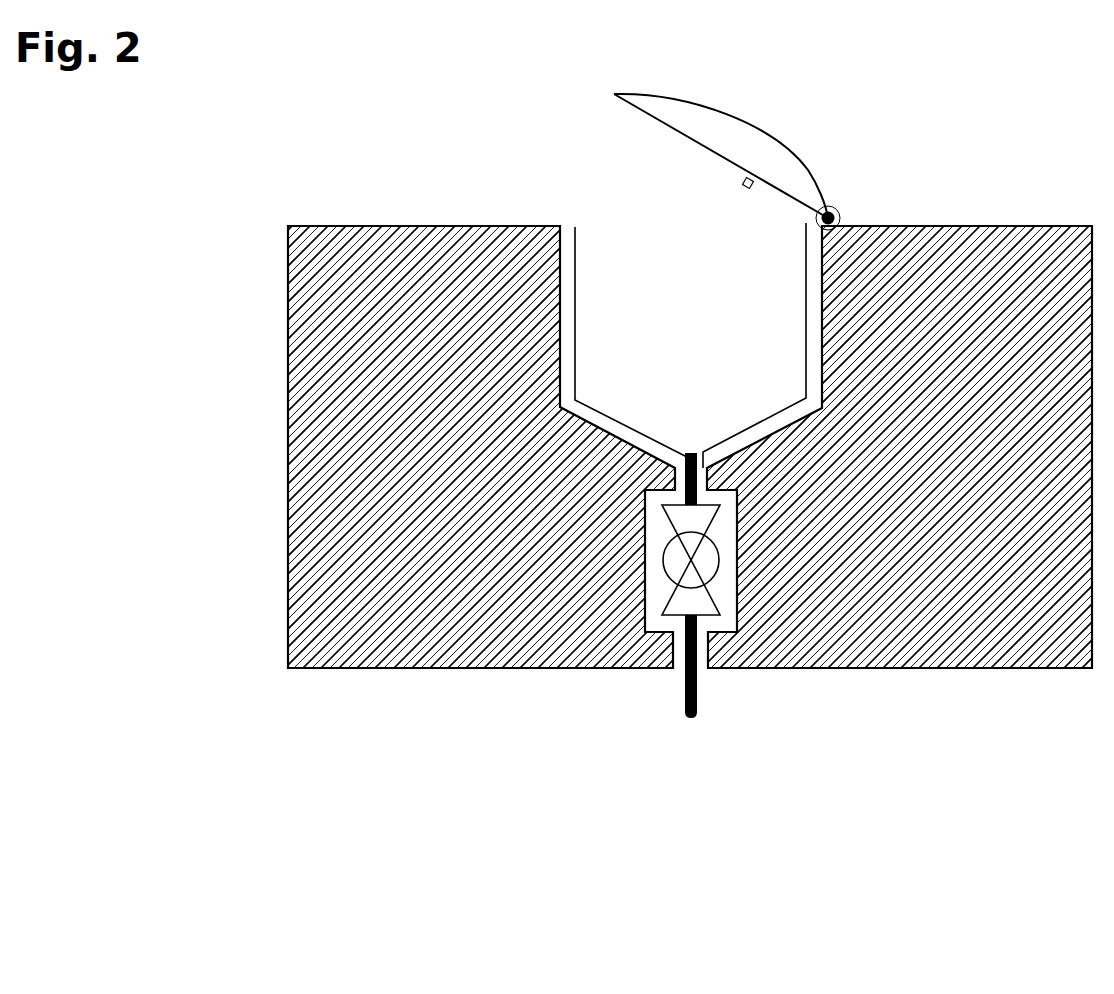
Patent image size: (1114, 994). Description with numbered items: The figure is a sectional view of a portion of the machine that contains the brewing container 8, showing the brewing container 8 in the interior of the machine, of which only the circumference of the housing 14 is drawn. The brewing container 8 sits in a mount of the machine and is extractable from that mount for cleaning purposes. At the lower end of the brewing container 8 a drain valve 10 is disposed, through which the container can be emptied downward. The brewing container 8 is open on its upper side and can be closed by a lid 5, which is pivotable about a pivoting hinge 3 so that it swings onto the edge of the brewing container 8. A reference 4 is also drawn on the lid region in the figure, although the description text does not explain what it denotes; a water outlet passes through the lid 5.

The housing 14 is at (883, 668).
The brewing container 8 is at (575, 227).
The drain valve 10 is at (668, 520).
The flap 4 is at (744, 187).
The lid 5 is at (807, 167).
The pivoting hinge 3 is at (836, 210).